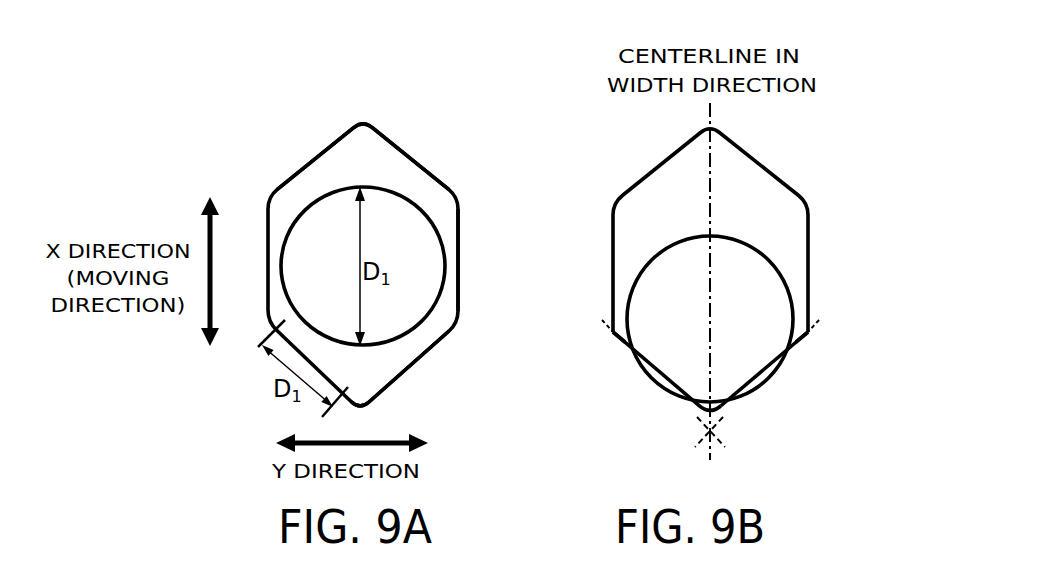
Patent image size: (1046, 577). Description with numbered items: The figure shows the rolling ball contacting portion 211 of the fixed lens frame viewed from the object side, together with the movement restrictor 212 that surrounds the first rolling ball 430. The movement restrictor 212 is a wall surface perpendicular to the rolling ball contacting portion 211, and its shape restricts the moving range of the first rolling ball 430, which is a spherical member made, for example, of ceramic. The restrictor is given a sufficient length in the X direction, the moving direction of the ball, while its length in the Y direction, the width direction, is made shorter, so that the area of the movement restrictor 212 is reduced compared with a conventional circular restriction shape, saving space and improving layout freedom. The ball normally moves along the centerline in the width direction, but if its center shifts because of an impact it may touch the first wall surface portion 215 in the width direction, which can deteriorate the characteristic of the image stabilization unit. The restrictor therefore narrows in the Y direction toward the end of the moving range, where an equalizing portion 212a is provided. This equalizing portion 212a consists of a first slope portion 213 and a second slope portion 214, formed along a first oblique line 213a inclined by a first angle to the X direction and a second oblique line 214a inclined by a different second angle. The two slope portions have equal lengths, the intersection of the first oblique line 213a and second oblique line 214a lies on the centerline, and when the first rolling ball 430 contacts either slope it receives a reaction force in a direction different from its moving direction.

In FIG. 9A, the rolling ball contacting portion 211 is at (382, 155).
In FIG. 9A, the movement restrictor 212 is at (435, 173).
In FIG. 9B, the movement restrictor 212 is at (762, 155).
In FIG. 9A, the equalizing portion 212a is at (407, 383).
In FIG. 9A, the first wall surface portion 215 is at (455, 263).
In FIG. 9A, the first rolling ball 430 is at (308, 240).
In FIG. 9B, the first slope portion 213 is at (665, 393).
In FIG. 9B, the second slope portion 214 is at (750, 392).
In FIG. 9B, the first oblique line 213a is at (620, 345).
In FIG. 9B, the second oblique line 214a is at (808, 335).